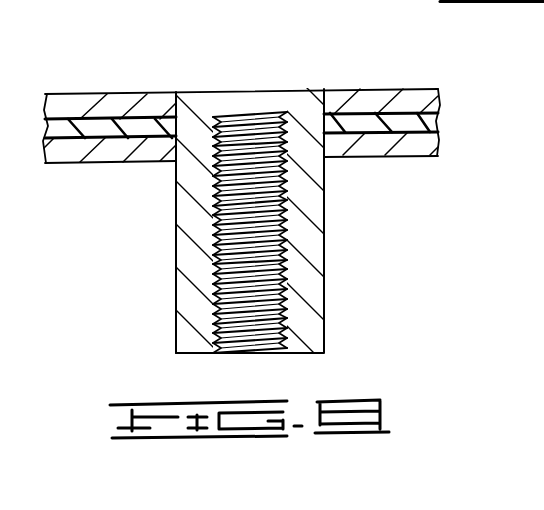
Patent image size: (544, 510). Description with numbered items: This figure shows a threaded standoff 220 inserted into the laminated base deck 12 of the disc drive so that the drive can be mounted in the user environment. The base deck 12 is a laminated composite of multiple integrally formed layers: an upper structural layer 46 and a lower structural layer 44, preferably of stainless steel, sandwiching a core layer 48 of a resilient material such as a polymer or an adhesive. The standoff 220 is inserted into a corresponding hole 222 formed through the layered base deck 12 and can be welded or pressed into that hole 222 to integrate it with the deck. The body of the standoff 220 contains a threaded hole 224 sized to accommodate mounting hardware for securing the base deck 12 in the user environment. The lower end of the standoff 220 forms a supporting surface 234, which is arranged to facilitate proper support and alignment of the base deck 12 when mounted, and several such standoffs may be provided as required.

The laminated base deck 12 is at (280, 113).
The structural layer 46 is at (412, 102).
The core layer 48 is at (410, 124).
The structural layer 44 is at (407, 151).
The threaded standoff 220 is at (232, 207).
The hole 222 is at (322, 133).
The threaded hole 224 is at (254, 363).
The supporting surface 234 is at (195, 356).